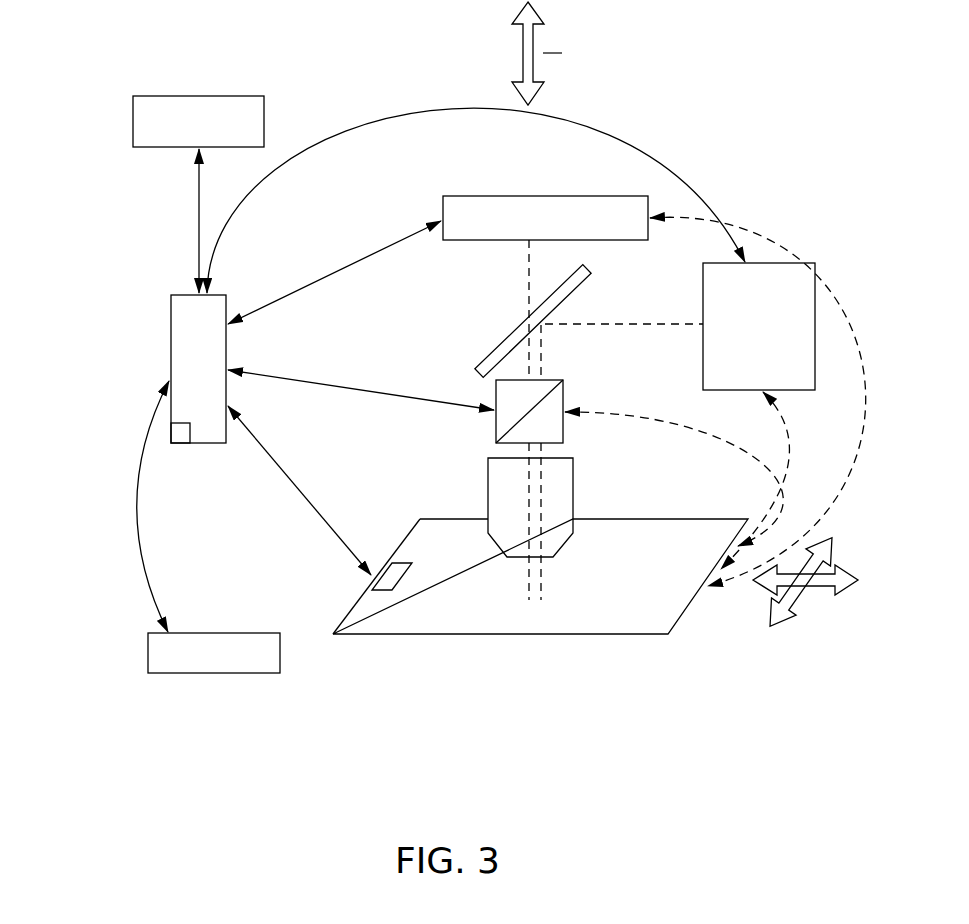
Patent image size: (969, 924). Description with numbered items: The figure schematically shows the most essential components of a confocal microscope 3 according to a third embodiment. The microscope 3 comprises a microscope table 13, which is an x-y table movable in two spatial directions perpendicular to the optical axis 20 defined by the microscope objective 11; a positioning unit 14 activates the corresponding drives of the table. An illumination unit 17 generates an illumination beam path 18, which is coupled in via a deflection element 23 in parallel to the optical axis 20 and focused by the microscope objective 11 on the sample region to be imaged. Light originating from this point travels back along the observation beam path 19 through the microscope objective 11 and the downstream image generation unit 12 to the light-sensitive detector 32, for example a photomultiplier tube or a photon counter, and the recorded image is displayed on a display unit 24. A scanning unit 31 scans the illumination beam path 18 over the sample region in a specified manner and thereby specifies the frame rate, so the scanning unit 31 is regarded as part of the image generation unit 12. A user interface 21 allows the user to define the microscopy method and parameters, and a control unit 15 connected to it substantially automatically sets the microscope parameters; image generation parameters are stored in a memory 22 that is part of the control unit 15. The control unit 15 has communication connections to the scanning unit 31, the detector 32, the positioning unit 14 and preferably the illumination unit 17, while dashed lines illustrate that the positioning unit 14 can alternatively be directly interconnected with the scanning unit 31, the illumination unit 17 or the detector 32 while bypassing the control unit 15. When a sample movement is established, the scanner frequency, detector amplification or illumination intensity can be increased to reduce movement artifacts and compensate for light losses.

The microscope 3 is at (731, 82).
The microscope objective 11 is at (573, 465).
The image generation unit 12 is at (390, 277).
The microscope table 13 is at (702, 548).
The positioning unit 14 is at (390, 567).
The control unit 15 is at (171, 347).
The illumination unit 17 is at (815, 352).
The illumination beam path 18 is at (651, 323).
The observation beam path 19 is at (529, 262).
The optical axis 20 is at (545, 485).
The user interface 21 is at (148, 652).
The memory 22 is at (178, 445).
The deflection element 23 is at (492, 350).
The display unit 24 is at (133, 115).
The scanning unit 31 is at (566, 388).
The light-sensitive detector 32 is at (478, 196).